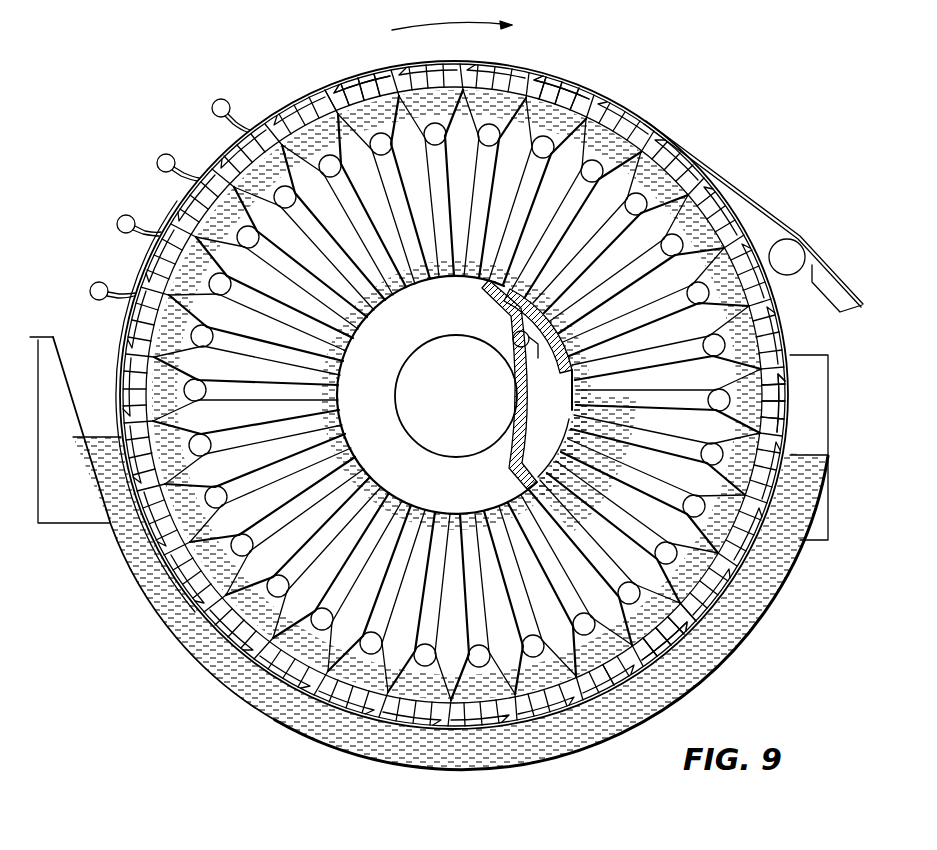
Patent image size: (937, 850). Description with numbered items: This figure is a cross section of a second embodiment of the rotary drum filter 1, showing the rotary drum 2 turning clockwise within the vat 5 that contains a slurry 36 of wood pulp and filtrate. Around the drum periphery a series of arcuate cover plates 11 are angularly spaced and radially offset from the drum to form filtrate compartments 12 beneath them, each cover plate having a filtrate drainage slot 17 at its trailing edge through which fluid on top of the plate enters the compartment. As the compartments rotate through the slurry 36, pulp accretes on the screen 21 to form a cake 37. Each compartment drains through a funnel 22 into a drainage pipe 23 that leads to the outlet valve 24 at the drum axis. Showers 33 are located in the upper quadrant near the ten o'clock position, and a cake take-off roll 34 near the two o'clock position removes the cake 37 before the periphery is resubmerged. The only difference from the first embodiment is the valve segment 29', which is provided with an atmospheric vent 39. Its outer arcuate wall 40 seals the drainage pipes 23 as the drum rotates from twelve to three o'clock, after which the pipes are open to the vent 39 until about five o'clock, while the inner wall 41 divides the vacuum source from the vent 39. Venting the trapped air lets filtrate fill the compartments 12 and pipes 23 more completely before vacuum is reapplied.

The rotary drum filter 1 is at (650, 100).
The rotary drum 2 is at (297, 95).
The vat 5 is at (737, 642).
The cover plates 11 is at (561, 87).
The filtrate compartments 12 is at (607, 678).
The filtrate drainage slot 17 is at (336, 89).
The screen 21 is at (776, 334).
The funnel 22 is at (657, 620).
The drainage pipe 23 is at (608, 256).
The outlet valve 24 is at (458, 445).
The valve segment 29' is at (504, 384).
The showers 33 is at (229, 106).
The cake take-off roll 34 is at (796, 252).
The slurry 36 is at (698, 668).
The cake 37 is at (742, 206).
The atmospheric vent 39 is at (533, 353).
The outer arcuate wall 40 is at (580, 372).
The inner wall 41 is at (503, 361).